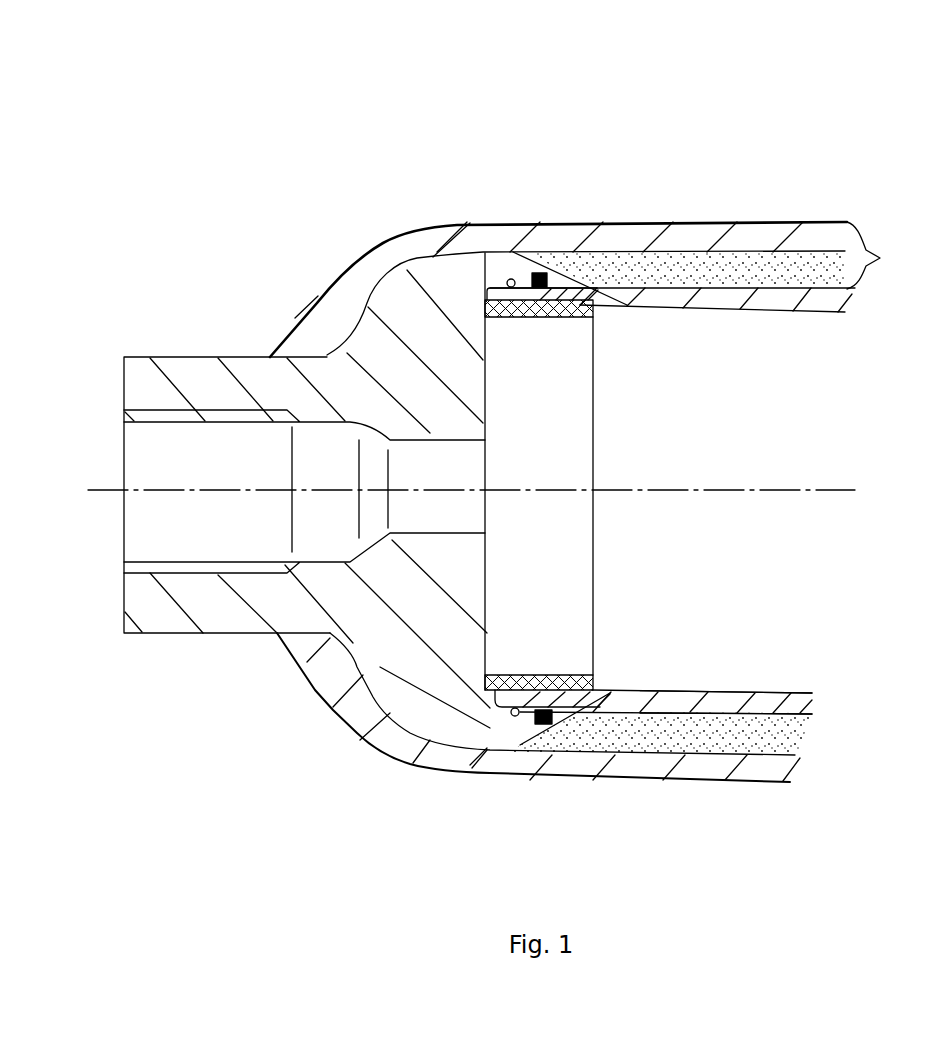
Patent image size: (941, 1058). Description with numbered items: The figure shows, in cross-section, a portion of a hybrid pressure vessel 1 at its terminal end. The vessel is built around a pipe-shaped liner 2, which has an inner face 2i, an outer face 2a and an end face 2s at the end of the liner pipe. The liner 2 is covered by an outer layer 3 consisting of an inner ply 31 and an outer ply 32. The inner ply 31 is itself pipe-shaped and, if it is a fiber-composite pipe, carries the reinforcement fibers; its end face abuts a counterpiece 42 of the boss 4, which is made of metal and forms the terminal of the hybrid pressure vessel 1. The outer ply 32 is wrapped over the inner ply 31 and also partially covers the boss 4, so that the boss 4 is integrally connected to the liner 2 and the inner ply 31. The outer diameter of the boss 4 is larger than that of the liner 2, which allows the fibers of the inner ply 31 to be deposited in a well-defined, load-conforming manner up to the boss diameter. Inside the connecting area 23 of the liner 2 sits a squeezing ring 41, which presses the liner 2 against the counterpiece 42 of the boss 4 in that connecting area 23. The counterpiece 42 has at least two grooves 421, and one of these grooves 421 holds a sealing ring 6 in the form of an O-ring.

The hybrid pressure vessel 1 is at (725, 152).
The liner 2 is at (640, 505).
The outer face of the liner 2a is at (767, 722).
The inner face of the liner 2i is at (745, 688).
The end face of liner pipe 2s is at (483, 295).
The connecting area of liner 23 is at (527, 722).
The outer layer 3 is at (675, 443).
The inner ply of outer layer 31 is at (735, 272).
The outer ply of outer layer 32 is at (703, 222).
The boss 4 is at (190, 382).
The squeezing ring 41 is at (572, 318).
The counterpiece 42 is at (528, 407).
The groove 421 is at (573, 722).
The sealing ring 6 is at (534, 272).